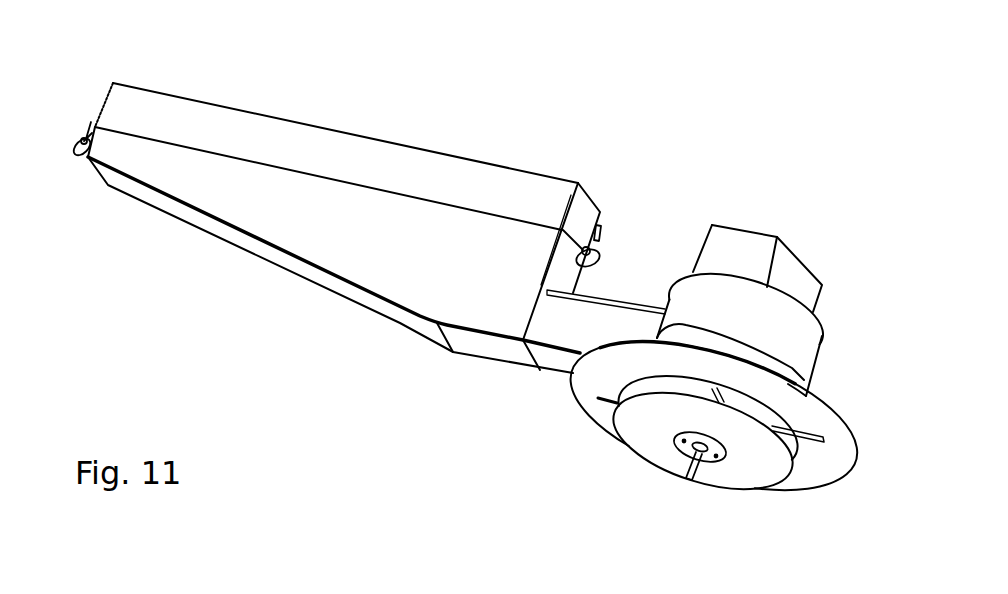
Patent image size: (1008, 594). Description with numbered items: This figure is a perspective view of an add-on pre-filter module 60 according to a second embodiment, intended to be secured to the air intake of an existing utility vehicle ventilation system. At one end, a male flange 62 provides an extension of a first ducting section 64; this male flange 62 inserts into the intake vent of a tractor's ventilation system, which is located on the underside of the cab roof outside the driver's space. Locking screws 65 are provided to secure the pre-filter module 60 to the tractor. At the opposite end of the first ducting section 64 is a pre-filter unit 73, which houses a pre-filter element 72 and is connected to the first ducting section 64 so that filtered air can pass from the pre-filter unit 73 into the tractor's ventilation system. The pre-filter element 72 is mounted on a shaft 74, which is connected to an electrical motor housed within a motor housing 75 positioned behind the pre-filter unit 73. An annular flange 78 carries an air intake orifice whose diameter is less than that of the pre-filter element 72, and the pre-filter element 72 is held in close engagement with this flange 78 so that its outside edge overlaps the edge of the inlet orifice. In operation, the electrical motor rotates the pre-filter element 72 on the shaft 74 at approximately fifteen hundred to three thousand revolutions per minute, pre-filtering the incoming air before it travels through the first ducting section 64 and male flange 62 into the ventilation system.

The pre-filter module 60 is at (637, 160).
The male flange 62 is at (144, 91).
The first ducting section 64 is at (221, 233).
The locking screws 65 is at (88, 132).
The pre-filter element 72 is at (776, 485).
The pre-filter unit 73 is at (813, 357).
The shaft 74 is at (692, 480).
The motor housing 75 is at (806, 270).
The flange 78 is at (847, 453).